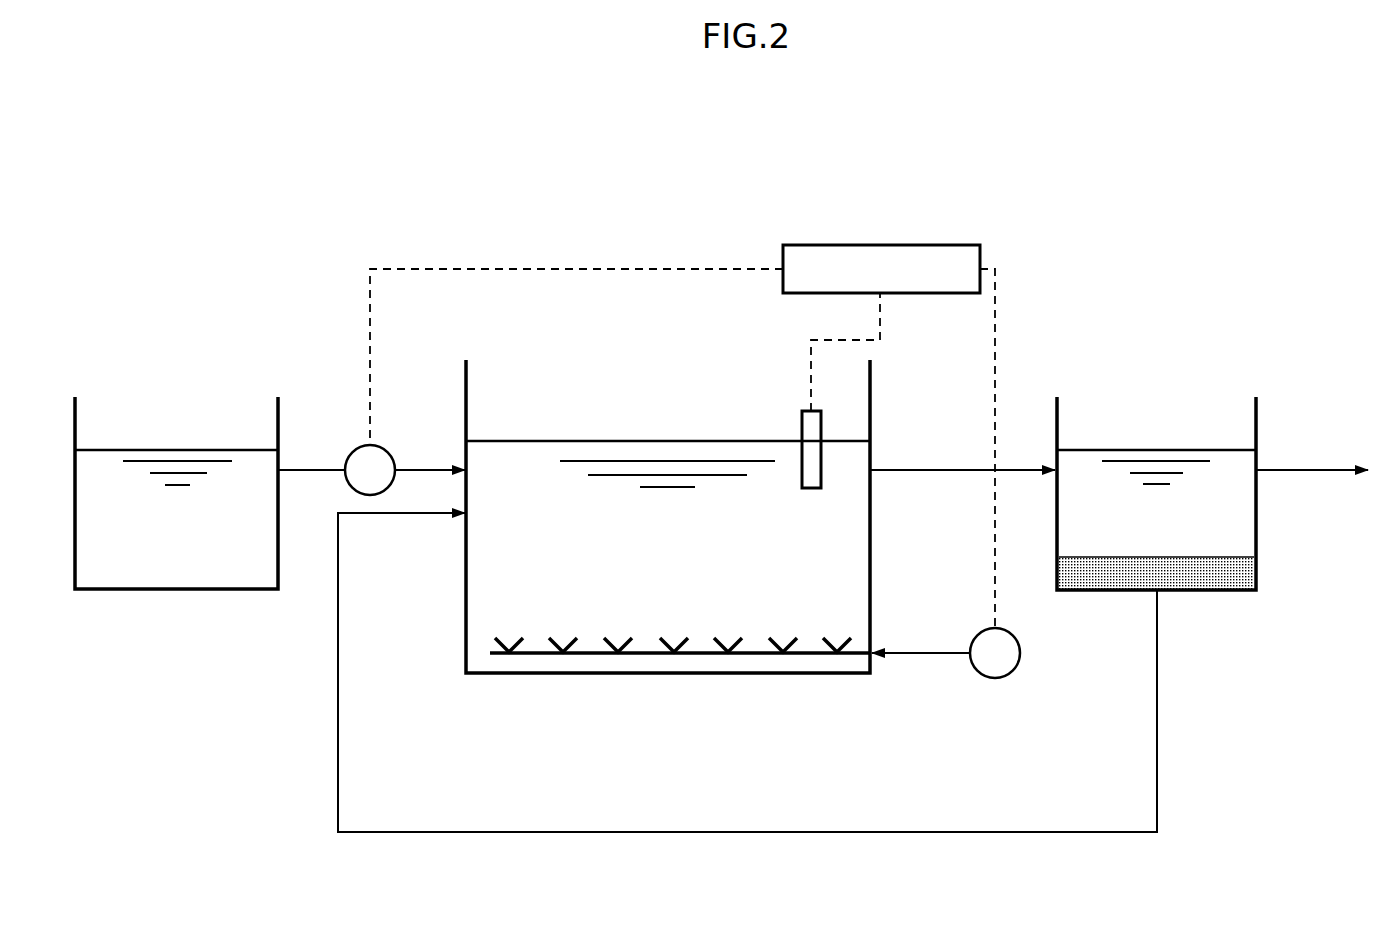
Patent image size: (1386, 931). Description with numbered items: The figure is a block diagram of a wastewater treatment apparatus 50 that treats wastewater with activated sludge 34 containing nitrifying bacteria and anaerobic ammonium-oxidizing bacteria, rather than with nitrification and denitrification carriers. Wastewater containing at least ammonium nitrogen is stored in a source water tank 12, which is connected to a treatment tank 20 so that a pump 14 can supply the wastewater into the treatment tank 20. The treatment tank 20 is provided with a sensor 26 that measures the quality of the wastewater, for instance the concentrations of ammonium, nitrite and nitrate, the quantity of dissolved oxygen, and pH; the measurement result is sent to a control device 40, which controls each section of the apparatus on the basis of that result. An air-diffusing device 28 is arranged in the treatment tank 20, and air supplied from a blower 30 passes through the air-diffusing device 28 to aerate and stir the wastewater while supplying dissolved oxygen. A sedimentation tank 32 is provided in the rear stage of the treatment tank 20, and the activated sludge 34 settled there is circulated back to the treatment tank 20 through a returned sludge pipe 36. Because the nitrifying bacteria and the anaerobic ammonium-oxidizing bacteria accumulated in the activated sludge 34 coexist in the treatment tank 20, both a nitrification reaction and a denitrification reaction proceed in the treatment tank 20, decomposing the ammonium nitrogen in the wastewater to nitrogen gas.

The wastewater treatment apparatus 50 is at (1050, 145).
The source water tank 12 is at (168, 591).
The pump 14 is at (388, 446).
The treatment tank 20 is at (545, 675).
The sensor 26 is at (821, 427).
The air-diffusing device 28 is at (650, 655).
The blower 30 is at (997, 679).
The sedimentation tank 32 is at (1214, 592).
The activated sludge 34 is at (1236, 572).
The returned sludge pipe 36 is at (738, 833).
The control device 40 is at (882, 243).